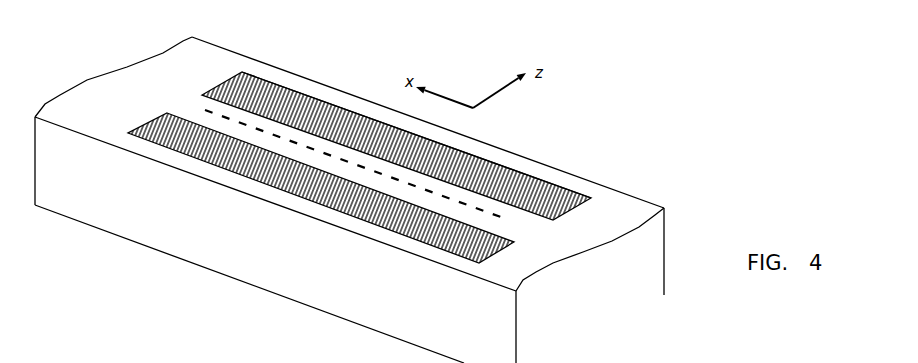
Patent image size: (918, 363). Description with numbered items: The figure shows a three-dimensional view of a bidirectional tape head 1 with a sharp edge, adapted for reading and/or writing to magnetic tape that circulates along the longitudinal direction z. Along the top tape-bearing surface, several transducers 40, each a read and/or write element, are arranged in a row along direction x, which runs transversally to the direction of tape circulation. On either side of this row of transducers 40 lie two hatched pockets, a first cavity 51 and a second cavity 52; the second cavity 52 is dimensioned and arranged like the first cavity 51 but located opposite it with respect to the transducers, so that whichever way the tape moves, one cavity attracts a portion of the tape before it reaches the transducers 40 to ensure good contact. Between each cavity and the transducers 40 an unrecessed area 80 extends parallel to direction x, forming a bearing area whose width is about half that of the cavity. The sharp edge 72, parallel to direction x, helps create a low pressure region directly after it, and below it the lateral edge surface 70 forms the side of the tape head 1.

The tape head 1 is at (213, 299).
The transducer 40 is at (215, 112).
The first cavity 51 is at (546, 182).
The second cavity 52 is at (155, 133).
The lateral edge surface 70 is at (133, 210).
The sharp edge 72 is at (195, 177).
The unrecessed area 80 is at (479, 160).